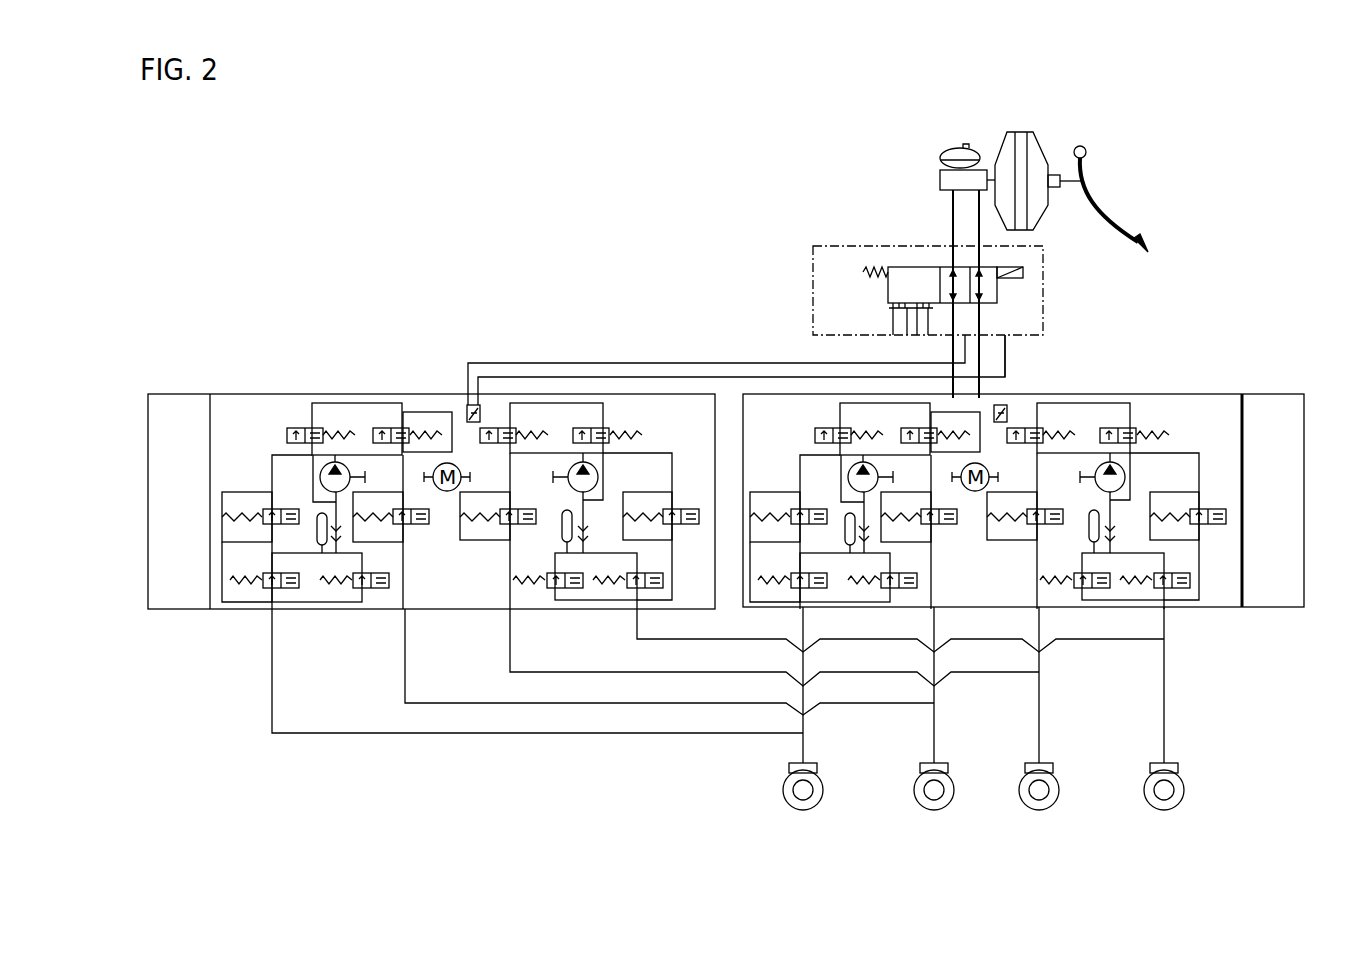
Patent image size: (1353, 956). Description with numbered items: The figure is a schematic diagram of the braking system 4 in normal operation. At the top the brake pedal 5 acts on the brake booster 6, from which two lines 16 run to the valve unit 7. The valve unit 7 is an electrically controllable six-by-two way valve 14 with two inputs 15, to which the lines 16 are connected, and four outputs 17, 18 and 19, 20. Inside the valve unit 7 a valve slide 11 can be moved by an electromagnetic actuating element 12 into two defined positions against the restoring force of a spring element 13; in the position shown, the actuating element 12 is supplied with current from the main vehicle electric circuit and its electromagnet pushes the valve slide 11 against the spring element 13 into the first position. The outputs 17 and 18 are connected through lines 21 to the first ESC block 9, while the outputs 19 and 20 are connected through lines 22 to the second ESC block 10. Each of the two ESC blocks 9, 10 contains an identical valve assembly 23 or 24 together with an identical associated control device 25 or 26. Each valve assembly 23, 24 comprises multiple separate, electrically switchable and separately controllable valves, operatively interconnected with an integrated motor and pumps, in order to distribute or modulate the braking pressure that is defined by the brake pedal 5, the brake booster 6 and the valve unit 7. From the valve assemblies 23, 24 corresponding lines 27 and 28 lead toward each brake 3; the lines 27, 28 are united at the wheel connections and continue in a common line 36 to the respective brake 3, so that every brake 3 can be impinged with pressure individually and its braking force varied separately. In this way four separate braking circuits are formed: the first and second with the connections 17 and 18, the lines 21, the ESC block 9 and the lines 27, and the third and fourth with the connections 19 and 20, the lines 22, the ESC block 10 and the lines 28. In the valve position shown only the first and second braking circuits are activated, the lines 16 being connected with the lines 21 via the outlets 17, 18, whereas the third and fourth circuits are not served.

The brake 3 is at (820, 785).
The braking system 4 is at (676, 157).
The brake pedal 5 is at (1108, 219).
The brake booster 6 is at (1012, 132).
The valve unit 7 is at (810, 250).
The first ESC block 9 is at (1024, 461).
The second ESC block 10 is at (431, 453).
The valve slide 11 is at (1000, 295).
The electromagnetic actuating element 12 is at (1030, 270).
The spring element 13 is at (873, 267).
The 6/2 way valve 14 is at (863, 300).
The inputs 15 is at (922, 303).
The lines 16 is at (977, 222).
The output 17 is at (1005, 337).
The output 18 is at (948, 337).
The output 19 is at (1010, 337).
The output 20 is at (948, 349).
The lines 21 is at (1007, 384).
The lines 22 is at (722, 376).
The valve assembly 23 is at (1168, 392).
The valve assembly 24 is at (416, 392).
The control device 25 is at (1264, 392).
The control device 26 is at (174, 392).
The line 27 is at (805, 624).
The line 28 is at (272, 690).
The common line 36 is at (805, 748).